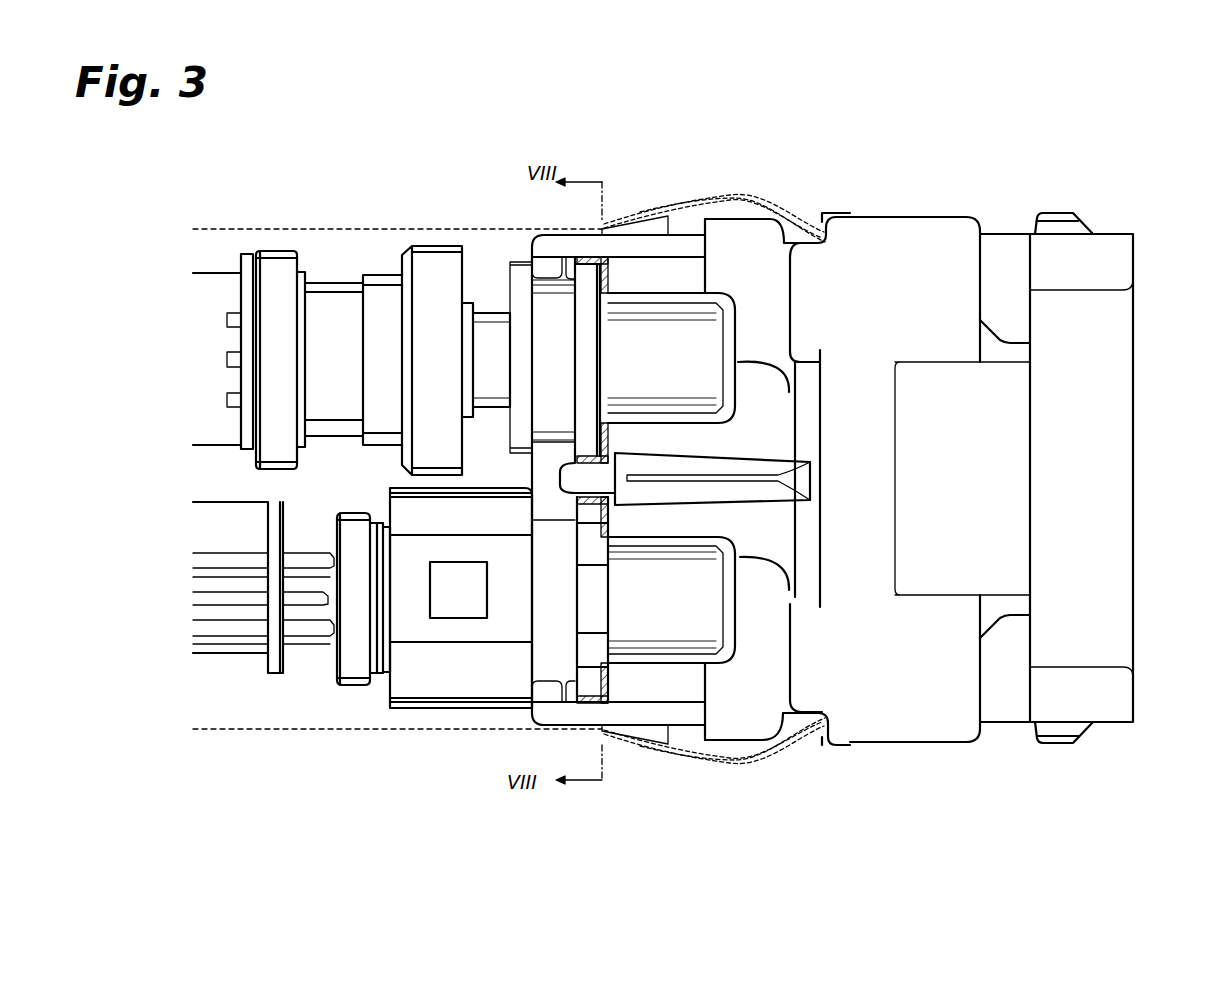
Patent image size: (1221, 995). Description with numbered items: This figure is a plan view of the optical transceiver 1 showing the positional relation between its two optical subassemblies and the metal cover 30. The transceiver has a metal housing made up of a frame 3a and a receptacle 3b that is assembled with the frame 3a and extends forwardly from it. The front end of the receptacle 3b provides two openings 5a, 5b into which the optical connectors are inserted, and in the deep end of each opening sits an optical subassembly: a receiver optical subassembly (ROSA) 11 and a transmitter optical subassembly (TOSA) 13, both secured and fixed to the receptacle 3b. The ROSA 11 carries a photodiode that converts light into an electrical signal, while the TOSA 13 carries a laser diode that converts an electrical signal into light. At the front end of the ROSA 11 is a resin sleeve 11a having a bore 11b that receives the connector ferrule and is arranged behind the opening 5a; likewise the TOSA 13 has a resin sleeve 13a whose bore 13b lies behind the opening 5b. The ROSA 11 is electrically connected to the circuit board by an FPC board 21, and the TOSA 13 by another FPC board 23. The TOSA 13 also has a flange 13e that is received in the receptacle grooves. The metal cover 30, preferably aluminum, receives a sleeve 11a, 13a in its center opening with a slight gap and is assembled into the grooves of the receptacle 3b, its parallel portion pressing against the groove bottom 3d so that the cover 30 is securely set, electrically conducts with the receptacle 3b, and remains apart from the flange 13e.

The optical transceiver 1 is at (950, 167).
The frame 3a is at (272, 232).
The receptacle 3b is at (748, 248).
The bottom of the groove 3d is at (587, 268).
The opening 5a is at (1133, 547).
The opening 5b is at (1133, 418).
The receiver optical subassembly (ROSA) 11 is at (450, 672).
The sleeve 11a is at (705, 588).
The bore 11b is at (736, 602).
The transmitter optical subassembly (TOSA) 13 is at (432, 275).
The sleeve 13a is at (705, 333).
The bore 13b is at (735, 362).
The flange 13e is at (578, 358).
The flexible printed circuit (FPC) board 21 is at (215, 655).
The flexible printed circuit (FPC) board 23 is at (215, 275).
The metal cover 30 is at (612, 272).